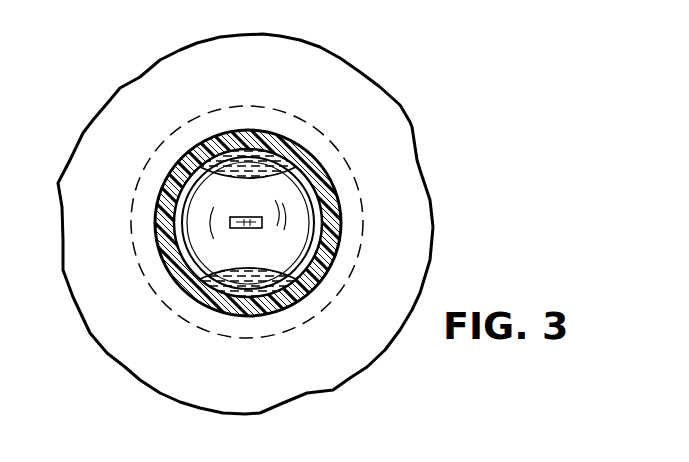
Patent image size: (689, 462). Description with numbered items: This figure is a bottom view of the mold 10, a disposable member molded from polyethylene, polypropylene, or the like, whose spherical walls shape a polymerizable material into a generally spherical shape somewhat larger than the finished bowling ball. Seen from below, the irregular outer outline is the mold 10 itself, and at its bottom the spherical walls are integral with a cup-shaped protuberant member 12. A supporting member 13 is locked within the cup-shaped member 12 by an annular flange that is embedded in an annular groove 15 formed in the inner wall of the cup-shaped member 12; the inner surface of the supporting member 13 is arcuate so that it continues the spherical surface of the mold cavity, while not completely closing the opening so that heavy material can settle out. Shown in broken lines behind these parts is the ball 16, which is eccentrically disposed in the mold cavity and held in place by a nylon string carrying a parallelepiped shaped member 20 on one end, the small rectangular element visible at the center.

The mold 10 is at (414, 120).
The cup-shaped protuberant member 12 is at (170, 262).
The supporting member 13 is at (256, 206).
The annular groove 15 is at (269, 132).
The ball 16 is at (357, 220).
The parallelepiped shaped member 20 is at (256, 228).